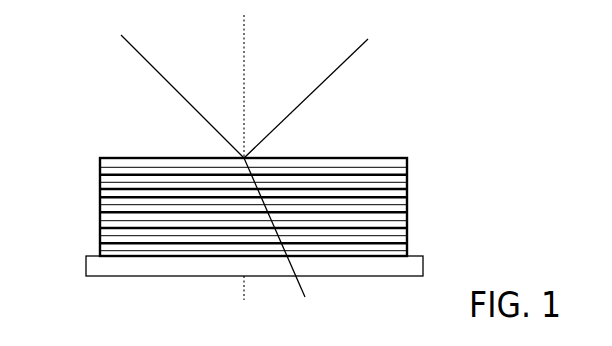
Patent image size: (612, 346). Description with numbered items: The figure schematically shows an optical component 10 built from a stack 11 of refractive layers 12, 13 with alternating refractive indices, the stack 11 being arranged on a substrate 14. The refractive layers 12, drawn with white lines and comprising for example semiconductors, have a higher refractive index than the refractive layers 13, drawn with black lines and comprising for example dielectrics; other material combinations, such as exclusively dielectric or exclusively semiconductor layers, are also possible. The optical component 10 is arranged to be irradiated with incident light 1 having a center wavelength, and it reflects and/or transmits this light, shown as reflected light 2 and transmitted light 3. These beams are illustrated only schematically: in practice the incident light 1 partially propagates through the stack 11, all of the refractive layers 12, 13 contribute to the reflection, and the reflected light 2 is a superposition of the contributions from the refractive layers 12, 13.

The incident light 1 is at (143, 58).
The reflected light 2 is at (339, 68).
The transmitted light 3 is at (296, 285).
The optical component 10 is at (394, 128).
The stack 11 is at (243, 202).
The refractive layers 12 is at (407, 193).
The refractive layers 13 is at (410, 205).
The substrate 14 is at (105, 267).